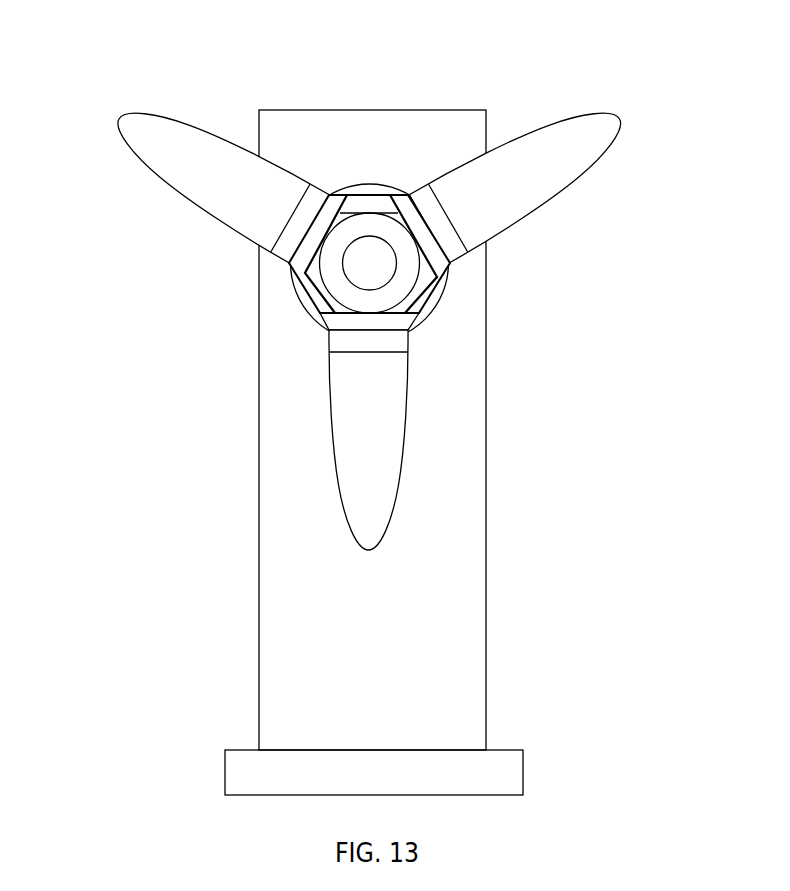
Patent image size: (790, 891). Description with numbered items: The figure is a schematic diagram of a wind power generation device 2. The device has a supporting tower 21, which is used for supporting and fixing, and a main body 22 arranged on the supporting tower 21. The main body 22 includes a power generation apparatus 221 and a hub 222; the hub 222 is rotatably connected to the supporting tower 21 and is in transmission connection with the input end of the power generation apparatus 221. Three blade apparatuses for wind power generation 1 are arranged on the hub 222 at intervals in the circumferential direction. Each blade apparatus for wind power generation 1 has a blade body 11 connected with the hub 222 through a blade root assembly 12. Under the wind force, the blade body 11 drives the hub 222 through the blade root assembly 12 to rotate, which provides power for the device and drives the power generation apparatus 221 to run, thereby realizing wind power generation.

The wind power generation device 2 is at (295, 72).
The supporting tower 21 is at (297, 560).
The main body 22 is at (97, 348).
The power generation apparatus 221 is at (342, 263).
The hub 222 is at (308, 303).
The blade apparatus for wind power generation 1 is at (175, 152).
The blade body 11 is at (488, 200).
The blade root assembly 12 is at (458, 252).